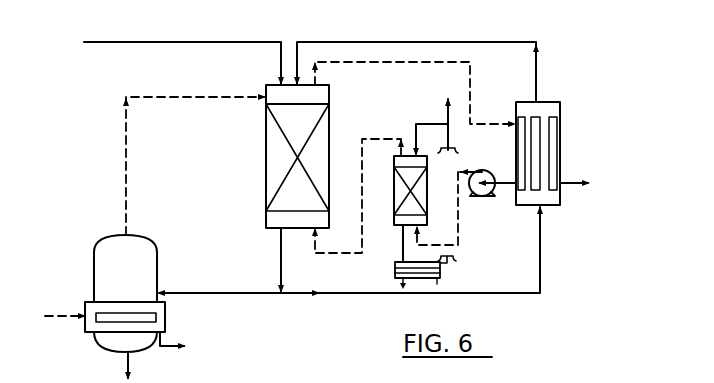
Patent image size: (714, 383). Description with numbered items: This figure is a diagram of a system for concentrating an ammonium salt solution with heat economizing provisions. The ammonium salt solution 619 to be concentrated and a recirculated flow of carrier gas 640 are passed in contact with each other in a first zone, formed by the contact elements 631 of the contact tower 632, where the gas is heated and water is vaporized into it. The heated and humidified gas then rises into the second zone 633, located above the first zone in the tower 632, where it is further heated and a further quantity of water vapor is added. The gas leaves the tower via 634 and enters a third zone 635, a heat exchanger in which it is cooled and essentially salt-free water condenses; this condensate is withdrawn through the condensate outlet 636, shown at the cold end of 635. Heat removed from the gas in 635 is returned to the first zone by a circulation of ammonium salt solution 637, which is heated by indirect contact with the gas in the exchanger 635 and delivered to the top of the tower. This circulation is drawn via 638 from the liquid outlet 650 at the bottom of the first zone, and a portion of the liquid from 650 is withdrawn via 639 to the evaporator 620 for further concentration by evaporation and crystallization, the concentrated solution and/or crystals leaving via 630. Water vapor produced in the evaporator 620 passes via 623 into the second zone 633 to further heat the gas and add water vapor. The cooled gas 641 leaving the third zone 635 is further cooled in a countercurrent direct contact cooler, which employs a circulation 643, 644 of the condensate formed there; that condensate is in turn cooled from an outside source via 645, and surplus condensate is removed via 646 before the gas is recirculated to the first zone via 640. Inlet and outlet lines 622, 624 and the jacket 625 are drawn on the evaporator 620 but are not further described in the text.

The ammonium salt solution 619 is at (182, 42).
The evaporator 620 is at (93, 256).
The inlet line 622 is at (66, 316).
The water vapor line 623 is at (126, 166).
The outlet line 624 is at (183, 347).
The heat exchanger jacket 625 is at (176, 305).
The concentrated solution and/or crystals outlet 630 is at (132, 362).
The contact elements 631 is at (290, 158).
The contact tower 632 is at (266, 133).
The second zone 633 is at (320, 97).
The gas flow line 634 is at (407, 66).
The third zone heat exchanger 635 is at (556, 128).
The condensate outlet 636 is at (568, 183).
The circulation of ammonium salt solution 637 is at (456, 42).
The circulation draw line 638 is at (365, 294).
The withdrawal line 639 is at (252, 294).
The carrier gas flow 640 is at (345, 258).
The cooled gas 641 is at (476, 214).
The condensate circulation 643 is at (402, 258).
The condensate circulation 644 is at (450, 137).
The outside cooling 645 is at (440, 270).
The surplus condensate outlet 646 is at (447, 100).
The liquid outlet 650 is at (281, 263).